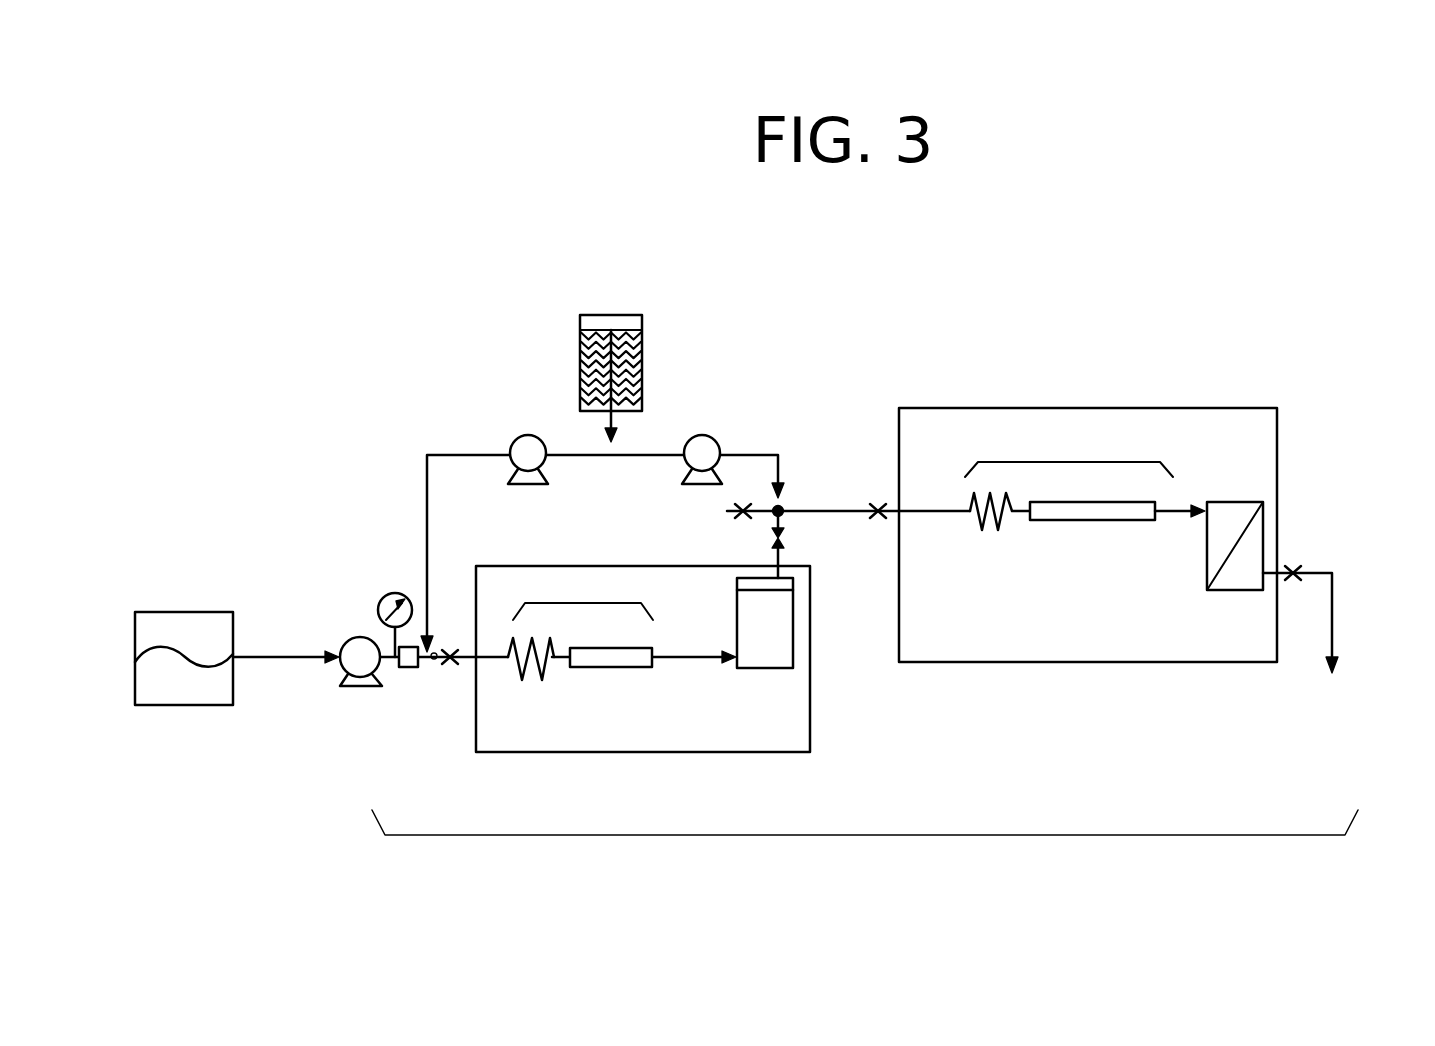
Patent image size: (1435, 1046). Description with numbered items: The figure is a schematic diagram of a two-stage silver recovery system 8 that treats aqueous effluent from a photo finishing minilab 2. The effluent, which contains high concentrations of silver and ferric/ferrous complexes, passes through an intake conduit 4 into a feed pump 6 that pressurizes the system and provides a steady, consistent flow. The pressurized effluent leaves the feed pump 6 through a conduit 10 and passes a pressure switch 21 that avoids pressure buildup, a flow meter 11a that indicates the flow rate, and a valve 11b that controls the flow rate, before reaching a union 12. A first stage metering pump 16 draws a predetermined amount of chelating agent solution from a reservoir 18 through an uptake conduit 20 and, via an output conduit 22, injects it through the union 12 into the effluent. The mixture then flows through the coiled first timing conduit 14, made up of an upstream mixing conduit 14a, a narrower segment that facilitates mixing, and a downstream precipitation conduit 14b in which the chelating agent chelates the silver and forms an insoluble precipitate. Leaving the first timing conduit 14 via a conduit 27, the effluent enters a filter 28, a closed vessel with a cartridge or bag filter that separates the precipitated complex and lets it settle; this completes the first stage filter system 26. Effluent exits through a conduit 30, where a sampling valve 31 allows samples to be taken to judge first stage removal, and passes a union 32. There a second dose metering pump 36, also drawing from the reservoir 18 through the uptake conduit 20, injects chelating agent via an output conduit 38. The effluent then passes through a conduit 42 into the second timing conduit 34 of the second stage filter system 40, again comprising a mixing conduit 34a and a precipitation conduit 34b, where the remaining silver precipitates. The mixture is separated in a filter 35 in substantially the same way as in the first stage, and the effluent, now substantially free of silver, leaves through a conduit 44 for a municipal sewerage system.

The photo finishing minilab 2 is at (168, 612).
The intake conduit 4 is at (293, 662).
The feed pump 6 is at (360, 715).
The silver recovery system 8 is at (865, 844).
The conduit 10 is at (387, 645).
The flow meter 11a is at (405, 668).
The valve 11b is at (447, 663).
The union 12 is at (431, 647).
The first timing conduit 14 is at (583, 594).
The mixing conduit 14a is at (525, 680).
The precipitation conduit 14b is at (645, 668).
The first stage metering pump 16 is at (517, 480).
The reservoir 18 is at (610, 313).
The uptake conduit 20 is at (630, 457).
The pressure switch 21 is at (342, 560).
The output conduit 22 is at (427, 547).
The first stage filter system 26 is at (500, 753).
The conduit 27 is at (683, 653).
The filter 28 is at (811, 686).
The conduit 30 is at (736, 547).
The sampling valve 31 is at (877, 496).
The union 32 is at (783, 517).
The second timing conduit 34 is at (1069, 451).
The mixing conduit 34a is at (985, 532).
The precipitation conduit 34b is at (1108, 523).
The filter 35 is at (1265, 537).
The second dose metering pump 36 is at (702, 483).
The output conduit 38 is at (782, 475).
The second stage filter system 40 is at (932, 663).
The conduit 42 is at (912, 509).
The conduit 44 is at (1333, 628).